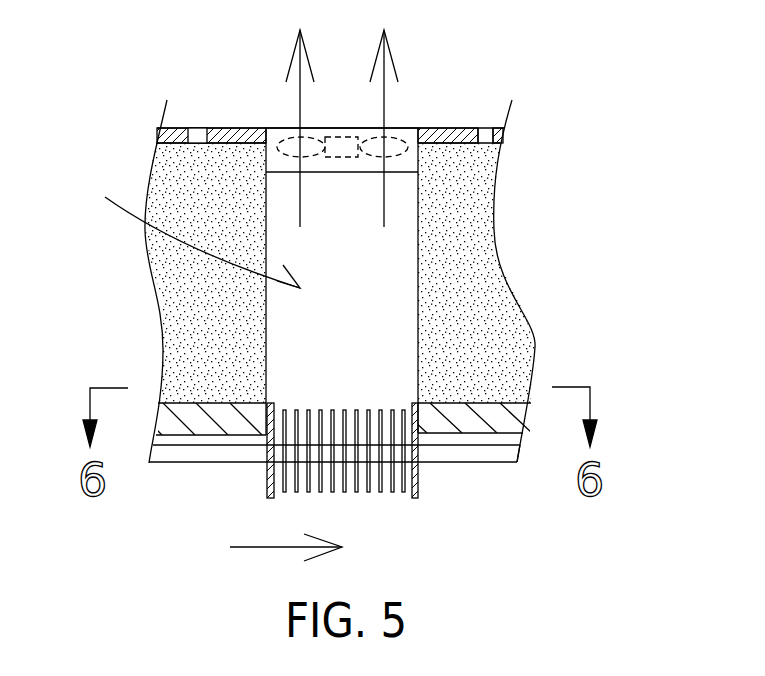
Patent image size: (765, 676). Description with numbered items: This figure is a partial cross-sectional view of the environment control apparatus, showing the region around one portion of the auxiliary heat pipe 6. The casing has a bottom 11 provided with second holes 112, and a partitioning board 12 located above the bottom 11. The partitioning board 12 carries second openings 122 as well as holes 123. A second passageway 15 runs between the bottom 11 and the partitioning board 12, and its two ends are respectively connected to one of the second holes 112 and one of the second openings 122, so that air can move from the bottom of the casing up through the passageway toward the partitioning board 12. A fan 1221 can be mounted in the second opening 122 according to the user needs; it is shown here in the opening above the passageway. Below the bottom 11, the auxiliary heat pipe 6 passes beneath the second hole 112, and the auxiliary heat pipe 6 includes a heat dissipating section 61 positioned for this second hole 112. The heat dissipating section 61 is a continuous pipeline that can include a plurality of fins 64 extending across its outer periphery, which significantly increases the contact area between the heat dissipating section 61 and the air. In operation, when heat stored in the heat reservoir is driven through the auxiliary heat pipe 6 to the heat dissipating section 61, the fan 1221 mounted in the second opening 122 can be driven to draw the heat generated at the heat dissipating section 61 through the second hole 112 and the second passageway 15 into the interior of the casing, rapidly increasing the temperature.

The bottom 11 is at (513, 412).
The second hole 112 is at (413, 393).
The partitioning board 12 is at (157, 128).
The second opening 122 is at (277, 128).
The fan 1221 is at (395, 133).
The hole 123 is at (196, 128).
The second passageway 15 is at (190, 229).
The auxiliary heat pipe 6 is at (461, 456).
The heat dissipating section 61 is at (280, 452).
The fin 64 is at (383, 492).